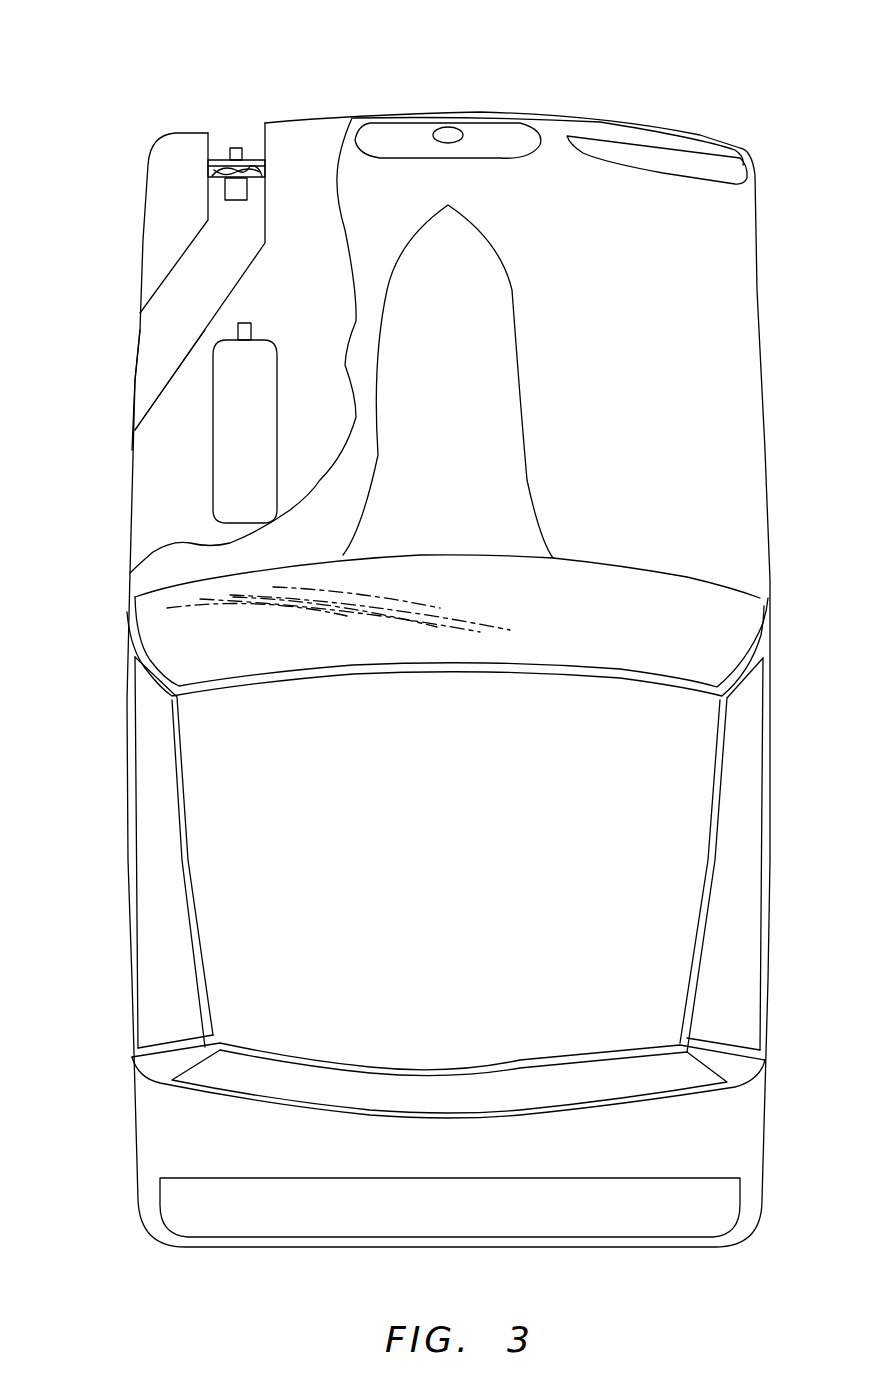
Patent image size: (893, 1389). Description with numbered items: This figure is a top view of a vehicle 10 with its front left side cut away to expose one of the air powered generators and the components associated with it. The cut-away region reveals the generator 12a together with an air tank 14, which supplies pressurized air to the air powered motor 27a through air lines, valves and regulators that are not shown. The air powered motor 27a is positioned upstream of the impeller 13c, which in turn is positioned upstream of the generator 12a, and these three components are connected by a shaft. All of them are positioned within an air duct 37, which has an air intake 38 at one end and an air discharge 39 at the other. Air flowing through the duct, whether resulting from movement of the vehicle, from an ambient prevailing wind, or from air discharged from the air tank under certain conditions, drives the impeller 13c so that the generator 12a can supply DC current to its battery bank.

The vehicle 10 is at (108, 663).
The air powered generator 12a is at (225, 193).
The impeller 13c is at (243, 160).
The air tank 14 is at (213, 437).
The air powered motor 27a is at (233, 147).
The air duct 37 is at (200, 285).
The air intake 38 is at (218, 133).
The air discharge 39 is at (135, 382).